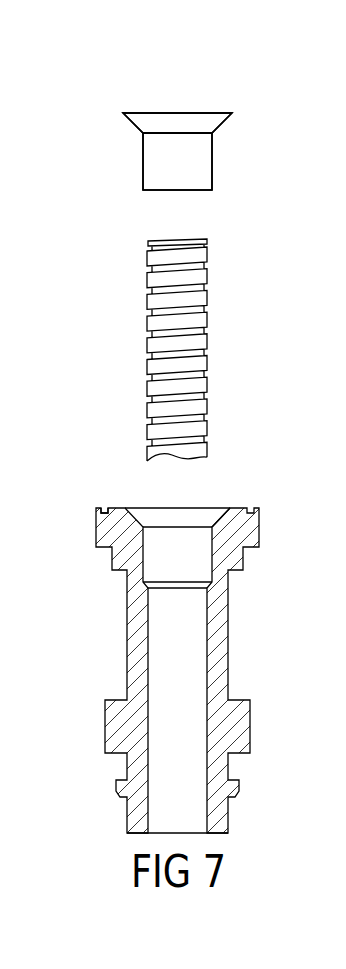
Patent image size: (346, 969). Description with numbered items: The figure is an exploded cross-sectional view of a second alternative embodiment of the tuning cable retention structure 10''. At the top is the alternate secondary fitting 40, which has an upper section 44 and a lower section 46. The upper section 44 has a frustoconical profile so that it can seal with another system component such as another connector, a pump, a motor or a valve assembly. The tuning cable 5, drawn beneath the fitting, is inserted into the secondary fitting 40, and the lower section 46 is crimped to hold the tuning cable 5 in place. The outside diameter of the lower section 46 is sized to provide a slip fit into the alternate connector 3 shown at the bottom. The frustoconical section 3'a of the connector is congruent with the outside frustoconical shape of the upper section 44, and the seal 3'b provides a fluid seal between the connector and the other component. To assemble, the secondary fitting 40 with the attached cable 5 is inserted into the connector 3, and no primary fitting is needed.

The tuning cable retention structure 10'' is at (200, 125).
The secondary fitting 40 is at (141, 163).
The upper section 44 is at (212, 118).
The lower section 46 is at (202, 170).
The tuning cable 5 is at (202, 345).
The connector 3 is at (192, 670).
The frustoconical section 3'a is at (246, 494).
The seal 3'b is at (72, 487).